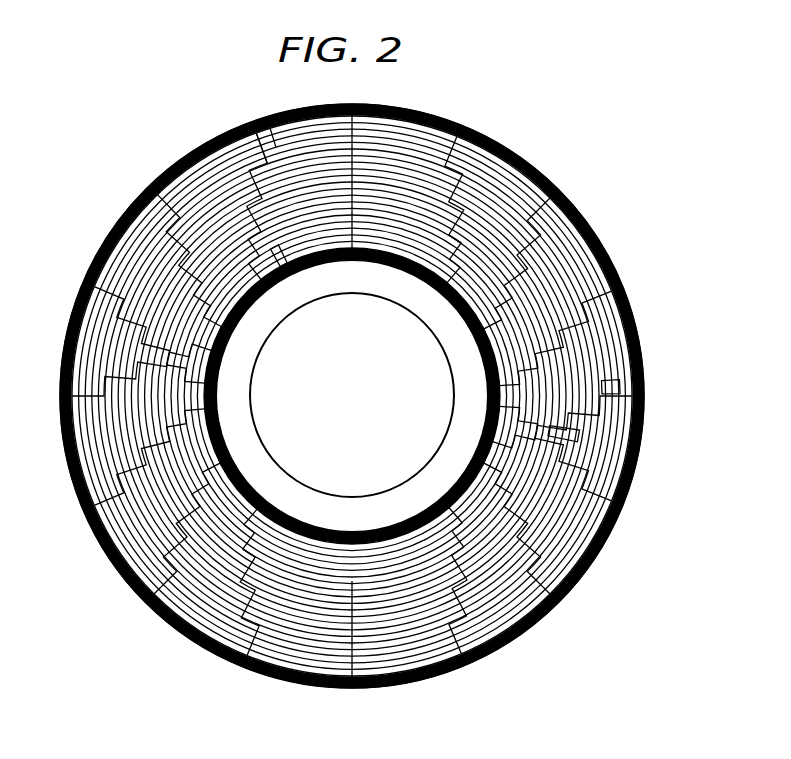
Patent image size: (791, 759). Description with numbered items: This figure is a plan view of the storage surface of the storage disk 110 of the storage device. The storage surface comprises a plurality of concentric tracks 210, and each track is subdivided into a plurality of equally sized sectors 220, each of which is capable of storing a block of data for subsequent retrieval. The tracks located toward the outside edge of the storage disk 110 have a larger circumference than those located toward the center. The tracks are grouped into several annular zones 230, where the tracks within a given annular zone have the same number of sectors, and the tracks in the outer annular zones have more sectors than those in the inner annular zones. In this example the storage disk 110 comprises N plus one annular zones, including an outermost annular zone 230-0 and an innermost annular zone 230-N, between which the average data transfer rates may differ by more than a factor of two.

The storage disk 110 is at (110, 166).
The sectors 220 is at (618, 278).
The concentric tracks 210 is at (538, 600).
The annular zones 230 is at (560, 427).
The outermost annular zone 230-0 is at (240, 115).
The innermost annular zone 230-N is at (268, 245).